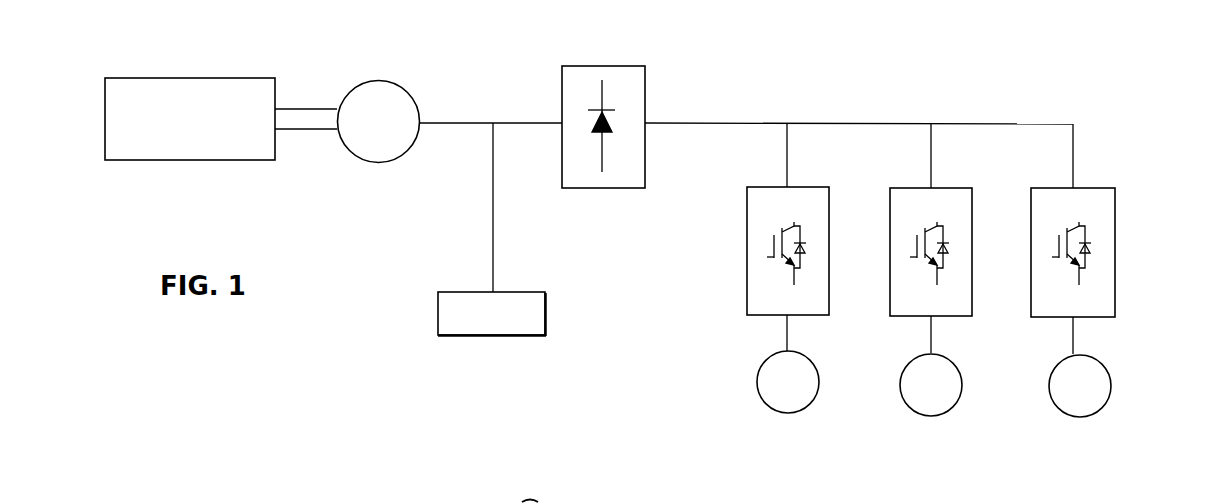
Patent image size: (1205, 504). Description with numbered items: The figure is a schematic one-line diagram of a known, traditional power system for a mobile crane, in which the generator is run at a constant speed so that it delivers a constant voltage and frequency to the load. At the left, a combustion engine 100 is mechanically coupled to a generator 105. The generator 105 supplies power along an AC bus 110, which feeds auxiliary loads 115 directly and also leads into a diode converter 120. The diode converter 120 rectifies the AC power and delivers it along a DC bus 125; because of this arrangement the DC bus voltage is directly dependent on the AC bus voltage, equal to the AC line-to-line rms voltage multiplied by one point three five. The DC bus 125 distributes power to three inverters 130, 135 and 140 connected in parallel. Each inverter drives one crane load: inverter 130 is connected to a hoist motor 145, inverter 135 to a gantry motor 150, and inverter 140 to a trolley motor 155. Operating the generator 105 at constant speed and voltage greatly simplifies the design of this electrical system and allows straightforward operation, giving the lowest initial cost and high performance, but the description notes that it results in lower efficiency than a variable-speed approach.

The combustion engine 100 is at (218, 160).
The generator 105 is at (400, 162).
The AC bus 110 is at (437, 118).
The auxiliary loads 115 is at (545, 313).
The diode converter 120 is at (632, 188).
The DC bus 125 is at (753, 118).
The inverter 130 is at (818, 314).
The inverter 135 is at (972, 292).
The inverter 140 is at (1115, 290).
The hoist motor 145 is at (803, 413).
The gantry motor 150 is at (948, 412).
The trolley motor 155 is at (1103, 410).